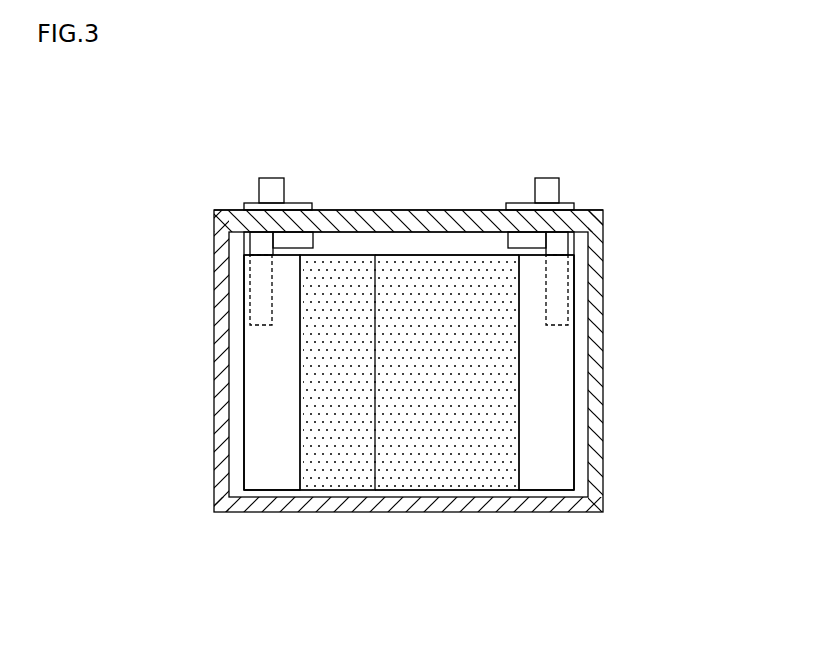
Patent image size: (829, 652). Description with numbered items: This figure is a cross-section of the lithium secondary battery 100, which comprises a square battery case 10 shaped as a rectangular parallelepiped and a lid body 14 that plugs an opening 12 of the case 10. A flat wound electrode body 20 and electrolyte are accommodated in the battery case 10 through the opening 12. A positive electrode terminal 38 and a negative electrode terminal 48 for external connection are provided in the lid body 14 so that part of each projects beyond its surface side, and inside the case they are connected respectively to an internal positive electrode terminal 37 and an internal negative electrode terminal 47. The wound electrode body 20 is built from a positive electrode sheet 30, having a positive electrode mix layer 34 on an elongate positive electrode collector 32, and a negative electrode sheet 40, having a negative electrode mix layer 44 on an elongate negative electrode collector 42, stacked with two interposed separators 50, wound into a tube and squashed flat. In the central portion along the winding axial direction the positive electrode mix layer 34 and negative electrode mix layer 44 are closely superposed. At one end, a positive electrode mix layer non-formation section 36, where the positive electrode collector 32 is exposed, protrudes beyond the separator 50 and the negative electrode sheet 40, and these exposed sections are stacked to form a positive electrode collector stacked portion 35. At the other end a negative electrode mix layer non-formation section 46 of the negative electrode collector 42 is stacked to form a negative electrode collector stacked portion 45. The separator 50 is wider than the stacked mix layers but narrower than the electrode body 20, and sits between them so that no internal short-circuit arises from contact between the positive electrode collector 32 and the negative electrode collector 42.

The lithium secondary battery 100 is at (188, 98).
The battery case 10 is at (606, 405).
The opening 12 is at (388, 249).
The lid body 14 is at (350, 211).
The wound electrode body 20 is at (433, 254).
The positive electrode sheet 30 is at (291, 411).
The positive electrode collector 32 is at (272, 480).
The positive electrode mix layer 34 is at (358, 455).
The positive electrode collector stacked portion 35 is at (245, 340).
The positive electrode mix layer non-formation section 36 is at (263, 452).
The internal positive electrode terminal 37 is at (262, 250).
The positive electrode terminal 38 is at (268, 185).
The negative electrode sheet 40 is at (561, 409).
The negative electrode collector 42 is at (542, 480).
The negative electrode mix layer 44 is at (490, 453).
The negative electrode collector stacked portion 45 is at (573, 345).
The negative electrode mix layer non-formation section 46 is at (560, 460).
The internal negative electrode terminal 47 is at (558, 243).
The negative electrode terminal 48 is at (548, 180).
The separator 50 is at (425, 470).